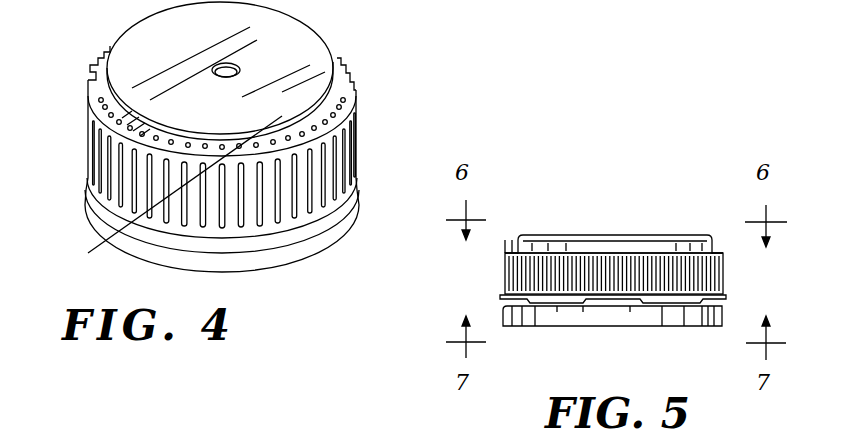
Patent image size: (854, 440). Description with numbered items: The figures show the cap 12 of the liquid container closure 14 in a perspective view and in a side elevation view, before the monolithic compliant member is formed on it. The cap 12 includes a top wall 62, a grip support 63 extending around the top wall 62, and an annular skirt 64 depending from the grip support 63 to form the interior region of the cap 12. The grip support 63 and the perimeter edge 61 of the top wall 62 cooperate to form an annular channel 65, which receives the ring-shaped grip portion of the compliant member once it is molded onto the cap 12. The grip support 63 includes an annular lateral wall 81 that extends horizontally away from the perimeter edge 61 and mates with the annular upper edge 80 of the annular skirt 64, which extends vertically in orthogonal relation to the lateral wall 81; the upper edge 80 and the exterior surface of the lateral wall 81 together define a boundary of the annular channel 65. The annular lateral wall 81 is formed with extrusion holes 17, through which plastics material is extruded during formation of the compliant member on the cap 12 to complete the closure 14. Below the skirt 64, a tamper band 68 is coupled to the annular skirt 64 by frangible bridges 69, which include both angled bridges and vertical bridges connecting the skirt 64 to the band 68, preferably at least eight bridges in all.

In FIG. 4, the cap 12 is at (380, 89).
In FIG. 5, the cap 12 is at (689, 230).
In FIG. 5, the liquid container closure 14 is at (584, 231).
In FIG. 4, the extrusion holes 17 is at (112, 95).
In FIG. 4, the perimeter edge 61 is at (196, 134).
In FIG. 5, the perimeter edge 61 is at (511, 250).
In FIG. 4, the top wall 62 is at (286, 37).
In FIG. 5, the top wall 62 is at (634, 231).
In FIG. 4, the grip support 63 is at (184, 135).
In FIG. 4, the annular skirt 64 is at (357, 159).
In FIG. 5, the annular skirt 64 is at (726, 281).
In FIG. 4, the annular channel 65 is at (350, 51).
In FIG. 5, the annular channel 65 is at (499, 231).
In FIG. 4, the tamper band 68 is at (304, 248).
In FIG. 5, the tamper band 68 is at (673, 314).
In FIG. 5, the frangible bridges 69 is at (572, 306).
In FIG. 4, the upper edge 80 is at (170, 191).
In FIG. 5, the upper edge 80 is at (718, 258).
In FIG. 4, the annular lateral wall 81 is at (323, 122).
In FIG. 5, the annular lateral wall 81 is at (512, 237).